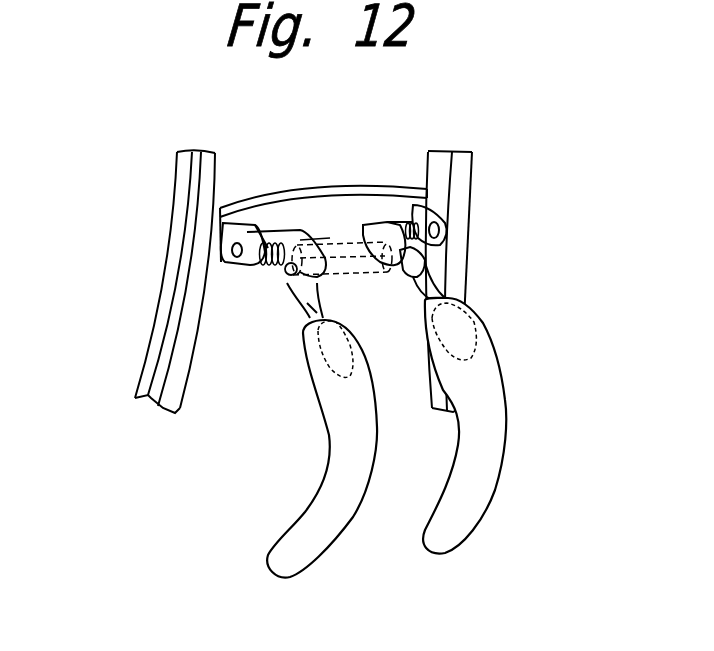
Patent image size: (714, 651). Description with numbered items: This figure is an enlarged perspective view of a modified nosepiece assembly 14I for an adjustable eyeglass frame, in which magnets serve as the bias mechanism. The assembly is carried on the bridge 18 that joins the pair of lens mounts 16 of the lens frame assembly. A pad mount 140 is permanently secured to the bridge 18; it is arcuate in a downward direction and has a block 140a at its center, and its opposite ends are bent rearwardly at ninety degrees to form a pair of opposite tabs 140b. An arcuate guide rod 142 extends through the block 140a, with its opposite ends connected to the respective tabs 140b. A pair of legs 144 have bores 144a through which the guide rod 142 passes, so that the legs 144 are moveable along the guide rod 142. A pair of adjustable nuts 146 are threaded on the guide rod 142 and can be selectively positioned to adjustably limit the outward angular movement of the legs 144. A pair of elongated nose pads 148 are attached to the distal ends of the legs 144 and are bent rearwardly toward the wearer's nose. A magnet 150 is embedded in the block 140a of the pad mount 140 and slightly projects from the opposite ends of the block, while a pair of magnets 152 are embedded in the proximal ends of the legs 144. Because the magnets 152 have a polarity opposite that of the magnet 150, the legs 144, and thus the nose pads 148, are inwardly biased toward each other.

The lens mount 16 is at (180, 192).
The bridge 18 is at (258, 205).
The pad mount 140 is at (382, 196).
The block 140a is at (314, 232).
The tab 140b is at (233, 243).
The guide rod 142 is at (282, 275).
The leg 144 is at (433, 284).
The bore 144a is at (365, 215).
The adjustable nut 146 is at (278, 272).
The nose pad 148 is at (335, 508).
The magnet 150 is at (360, 270).
The magnet 152 is at (288, 274).
The nosepiece assembly 14I is at (388, 555).